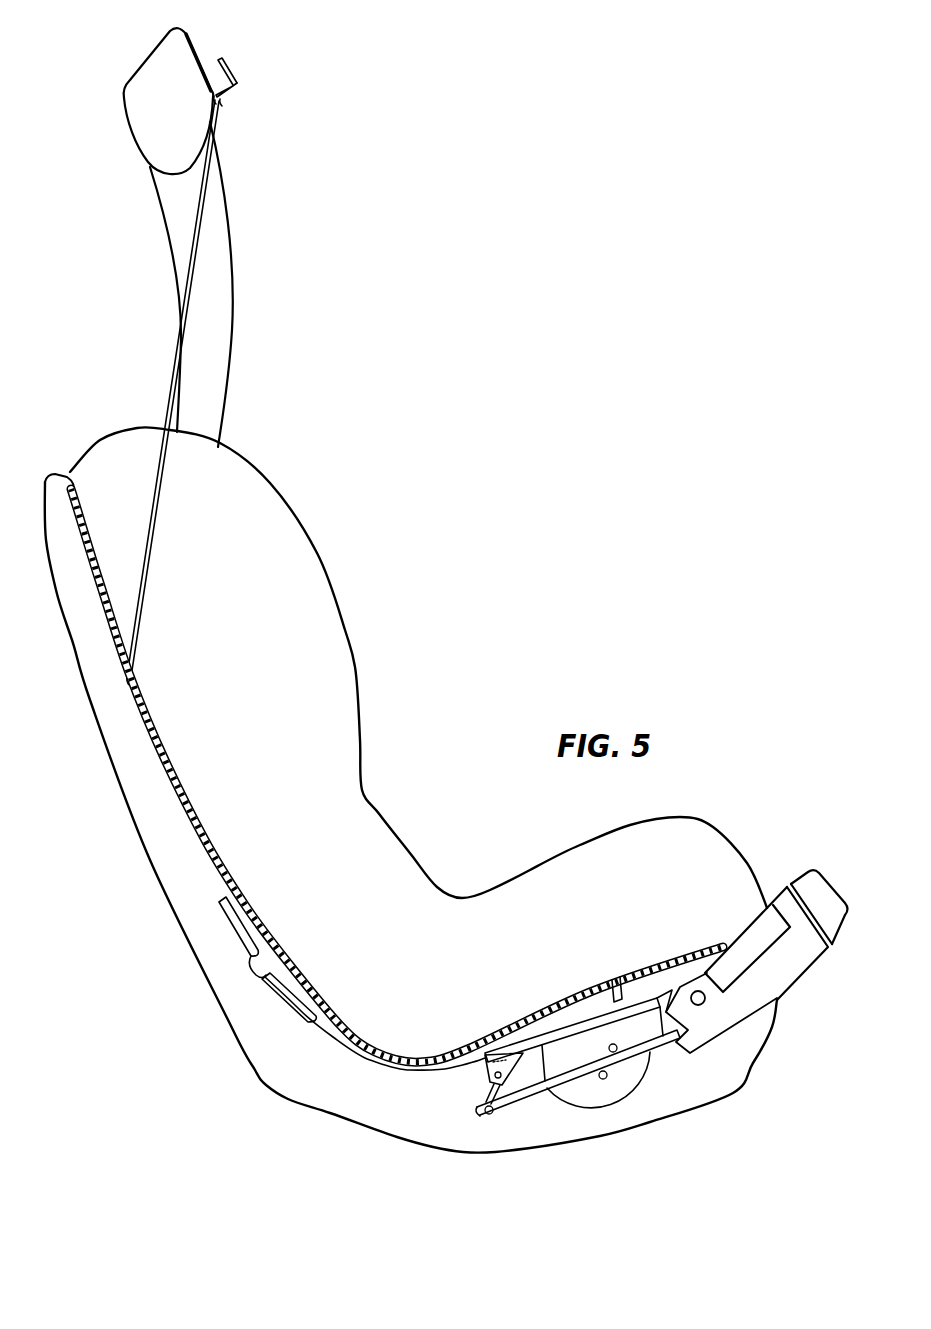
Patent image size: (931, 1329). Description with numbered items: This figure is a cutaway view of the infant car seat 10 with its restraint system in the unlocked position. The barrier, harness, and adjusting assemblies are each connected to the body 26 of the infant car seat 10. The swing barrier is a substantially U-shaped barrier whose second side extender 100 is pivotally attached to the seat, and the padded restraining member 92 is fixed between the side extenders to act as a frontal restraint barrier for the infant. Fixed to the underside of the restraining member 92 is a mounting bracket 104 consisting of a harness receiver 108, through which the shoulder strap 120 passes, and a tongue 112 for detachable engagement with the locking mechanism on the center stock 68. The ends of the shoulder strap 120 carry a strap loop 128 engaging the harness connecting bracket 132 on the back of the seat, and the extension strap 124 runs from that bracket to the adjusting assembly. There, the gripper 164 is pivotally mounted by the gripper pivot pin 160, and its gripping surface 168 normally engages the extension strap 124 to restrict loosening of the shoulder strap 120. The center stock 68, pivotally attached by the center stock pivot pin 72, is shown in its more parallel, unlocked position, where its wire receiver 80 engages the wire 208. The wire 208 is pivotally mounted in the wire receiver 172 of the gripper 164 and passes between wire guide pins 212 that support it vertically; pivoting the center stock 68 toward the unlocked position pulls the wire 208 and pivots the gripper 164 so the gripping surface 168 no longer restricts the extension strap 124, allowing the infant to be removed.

The infant car seat 10 is at (375, 547).
The body 26 is at (84, 738).
The center stock 68 is at (818, 887).
The center stock pivot pin 72 is at (704, 1003).
The wire receiver 80 is at (683, 1032).
The restraining member 92 is at (144, 66).
The second side extender 100 is at (165, 190).
The mounting bracket 104 is at (228, 92).
The harness receiver 108 is at (226, 106).
The tongue 112 is at (233, 70).
The shoulder strap 120 is at (218, 144).
The extension strap 124 is at (332, 1033).
The strap loop 128 is at (227, 913).
The harness connecting bracket 132 is at (260, 963).
The gripper pivot pin 160 is at (487, 1107).
The gripper 164 is at (490, 1072).
The gripping surface 168 is at (482, 1060).
The wire receiver 172 is at (485, 1118).
The wire 208 is at (520, 1100).
The wire guide pins 212 is at (618, 1060).